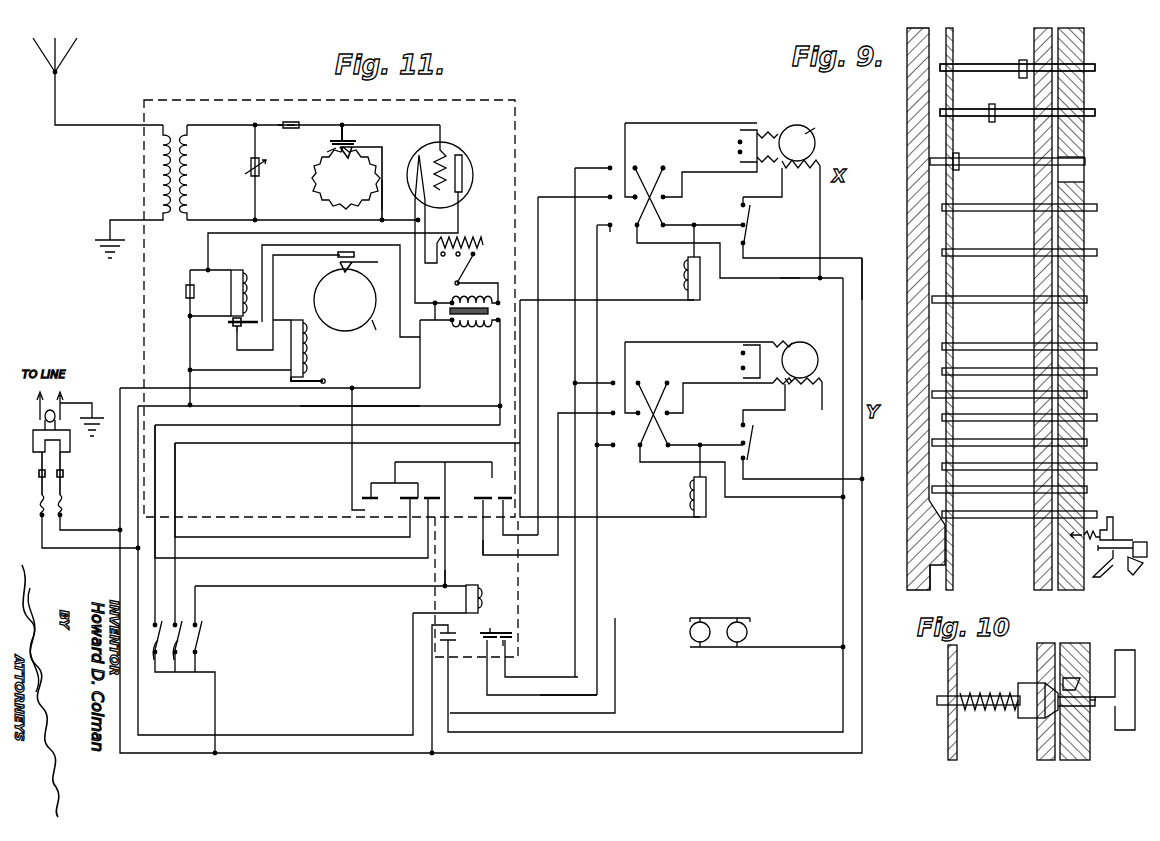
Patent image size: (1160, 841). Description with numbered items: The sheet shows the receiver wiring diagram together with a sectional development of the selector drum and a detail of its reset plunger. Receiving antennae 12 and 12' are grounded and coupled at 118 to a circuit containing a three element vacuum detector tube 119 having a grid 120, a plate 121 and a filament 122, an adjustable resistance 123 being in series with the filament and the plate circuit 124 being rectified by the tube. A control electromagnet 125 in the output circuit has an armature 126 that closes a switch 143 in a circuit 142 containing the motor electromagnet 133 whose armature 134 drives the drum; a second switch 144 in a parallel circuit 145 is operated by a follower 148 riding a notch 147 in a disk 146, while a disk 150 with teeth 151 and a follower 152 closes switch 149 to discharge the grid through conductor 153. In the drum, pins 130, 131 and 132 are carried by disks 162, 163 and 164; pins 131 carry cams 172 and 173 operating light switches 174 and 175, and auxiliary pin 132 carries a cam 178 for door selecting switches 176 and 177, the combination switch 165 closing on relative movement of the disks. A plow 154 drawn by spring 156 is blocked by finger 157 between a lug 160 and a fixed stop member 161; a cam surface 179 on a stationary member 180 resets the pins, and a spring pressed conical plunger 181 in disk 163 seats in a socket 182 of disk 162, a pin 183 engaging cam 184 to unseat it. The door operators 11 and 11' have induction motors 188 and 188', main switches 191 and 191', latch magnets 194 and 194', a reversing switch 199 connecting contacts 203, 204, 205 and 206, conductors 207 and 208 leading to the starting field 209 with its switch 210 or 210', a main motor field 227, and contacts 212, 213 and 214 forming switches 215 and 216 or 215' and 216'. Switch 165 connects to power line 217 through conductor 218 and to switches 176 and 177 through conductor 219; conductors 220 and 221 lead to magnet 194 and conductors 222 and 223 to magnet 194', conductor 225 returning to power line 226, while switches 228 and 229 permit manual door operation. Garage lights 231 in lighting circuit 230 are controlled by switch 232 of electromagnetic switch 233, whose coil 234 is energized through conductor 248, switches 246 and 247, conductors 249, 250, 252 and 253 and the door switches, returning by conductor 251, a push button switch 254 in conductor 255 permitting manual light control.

In FIG. 11, the door operator 11 is at (839, 150).
In FIG. 11, the door operator 11' is at (805, 323).
In FIG. 11, the receiving antenna 12 is at (87, 81).
In FIG. 11, the receiving antenna 12' is at (76, 55).
In FIG. 11, the coupling 118 is at (172, 212).
In FIG. 11, the vacuum detector tube 119 is at (460, 157).
In FIG. 11, the grid 120 is at (442, 152).
In FIG. 11, the plate 121 is at (464, 177).
In FIG. 11, the filament 122 is at (412, 180).
In FIG. 11, the adjustable resistance 123 is at (468, 243).
In FIG. 11, the plate circuit 124 is at (233, 233).
In FIG. 11, the electromagnet 125 is at (232, 302).
In FIG. 11, the armature 126 is at (230, 328).
In FIG. 9, the pins 130 is at (995, 312).
In FIG. 9, the pins 131 is at (1014, 116).
In FIG. 9, the auxiliary pin 132 is at (968, 60).
In FIG. 11, the electromagnet 133 is at (305, 372).
In FIG. 11, the armature 134 is at (315, 378).
In FIG. 11, the circuit 142 is at (270, 350).
In FIG. 11, the switch 143 is at (246, 326).
In FIG. 11, the second switch 144 is at (352, 262).
In FIG. 11, the parallel circuit 145 is at (296, 250).
In FIG. 11, the disk 146 is at (380, 336).
In FIG. 11, the notch 147 is at (342, 275).
In FIG. 11, the follower 148 is at (364, 270).
In FIG. 11, the switch 149 is at (342, 140).
In FIG. 11, the disk 150 is at (318, 193).
In FIG. 11, the teeth 151 is at (329, 156).
In FIG. 11, the follower 152 is at (348, 146).
In FIG. 11, the conductor 153 is at (383, 202).
In FIG. 9, the plow 154 is at (1100, 580).
In FIG. 9, the light spring 156 is at (1052, 540).
In FIG. 9, the blocking finger 157 is at (1128, 568).
In FIG. 9, the lug 160 is at (1116, 525).
In FIG. 9, the fixed stop member 161 is at (1126, 546).
In FIG. 9, the disk 162 is at (1084, 280).
In FIG. 10, the disk 162 is at (1075, 758).
In FIG. 9, the disk 163 is at (1032, 296).
In FIG. 10, the disk 163 is at (1040, 758).
In FIG. 9, the third disk 164 is at (946, 561).
In FIG. 10, the third disk 164 is at (952, 675).
In FIG. 11, the switch 165 is at (362, 496).
In FIG. 9, the cam 172 is at (990, 122).
In FIG. 9, the cam 173 is at (957, 170).
In FIG. 11, the switch 174 is at (474, 492).
In FIG. 11, the switch 175 is at (506, 492).
In FIG. 11, the door selecting switch 176 is at (403, 498).
In FIG. 11, the door selecting switch 177 is at (430, 495).
In FIG. 9, the cam 178 is at (1020, 60).
In FIG. 9, the cam surface 179 is at (935, 510).
In FIG. 9, the stationary member 180 is at (917, 590).
In FIG. 10, the spring pressed conical plunger 181 is at (1025, 715).
In FIG. 10, the socket 182 is at (1080, 688).
In FIG. 10, the pin 183 is at (1096, 707).
In FIG. 10, the cam 184 is at (1128, 650).
In FIG. 11, the single phase induction motor 188 is at (829, 125).
In FIG. 11, the motor 188' is at (810, 353).
In FIG. 11, the main motor switch 191 is at (781, 221).
In FIG. 11, the switch 191' is at (783, 429).
In FIG. 11, the latch magnet 194 is at (625, 266).
In FIG. 11, the latch magnet 194' is at (715, 491).
In FIG. 11, the reversing switch 199 is at (658, 162).
In FIG. 11, the stationary contact 203 is at (645, 205).
In FIG. 11, the stationary contact 204 is at (663, 166).
In FIG. 11, the contact 205 is at (641, 162).
In FIG. 11, the contact 206 is at (664, 200).
In FIG. 11, the conductor 207 is at (708, 125).
In FIG. 11, the conductor 208 is at (720, 168).
In FIG. 11, the starting field 209 is at (781, 126).
In FIG. 11, the switch 210 is at (753, 131).
In FIG. 11, the relay 210' is at (708, 362).
In FIG. 11, the contacts 212 is at (608, 194).
In FIG. 11, the contact 213 is at (612, 164).
In FIG. 11, the contact 214 is at (617, 239).
In FIG. 11, the switch 215 is at (576, 413).
In FIG. 11, the switch 215' is at (581, 414).
In FIG. 11, the switch 216 is at (595, 215).
In FIG. 11, the switch 216' is at (724, 420).
In FIG. 11, the power line 217 is at (866, 286).
In FIG. 11, the conductor 218 is at (353, 412).
In FIG. 11, the conductor 219 is at (394, 470).
In FIG. 11, the conductor 220 is at (258, 558).
In FIG. 11, the conductor 221 is at (414, 406).
In FIG. 11, the conductor 222 is at (317, 537).
In FIG. 11, the conductor 223 is at (452, 426).
In FIG. 11, the conductor 225 is at (768, 278).
In FIG. 11, the power line 226 is at (138, 716).
In FIG. 11, the main motor field 227 is at (812, 172).
In FIG. 11, the switch 228 is at (155, 662).
In FIG. 11, the switch 229 is at (180, 670).
In FIG. 11, the lighting circuit 230 is at (616, 693).
In FIG. 11, the garage lights 231 is at (735, 622).
In FIG. 11, the switch 232 is at (449, 646).
In FIG. 11, the electromagnetic switch 233 is at (508, 626).
In FIG. 11, the electromagnetic coil 234 is at (466, 613).
In FIG. 11, the switch 246 is at (504, 640).
In FIG. 11, the switch 247 is at (504, 637).
In FIG. 11, the conductor 248 is at (445, 568).
In FIG. 11, the conductor 249 is at (559, 698).
In FIG. 11, the conductor 250 is at (540, 364).
In FIG. 11, the conductor 251 is at (413, 694).
In FIG. 11, the conductor 252 is at (560, 555).
In FIG. 11, the conductor 253 is at (582, 594).
In FIG. 11, the push button switch 254 is at (200, 646).
In FIG. 11, the conductor 255 is at (316, 586).